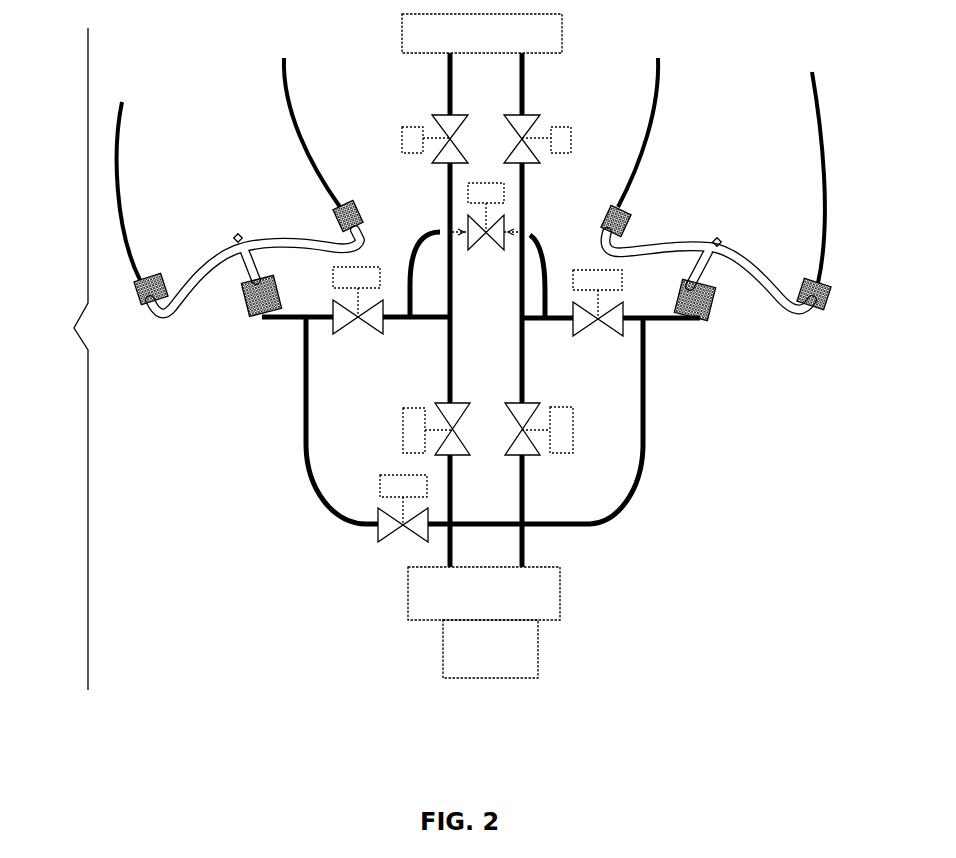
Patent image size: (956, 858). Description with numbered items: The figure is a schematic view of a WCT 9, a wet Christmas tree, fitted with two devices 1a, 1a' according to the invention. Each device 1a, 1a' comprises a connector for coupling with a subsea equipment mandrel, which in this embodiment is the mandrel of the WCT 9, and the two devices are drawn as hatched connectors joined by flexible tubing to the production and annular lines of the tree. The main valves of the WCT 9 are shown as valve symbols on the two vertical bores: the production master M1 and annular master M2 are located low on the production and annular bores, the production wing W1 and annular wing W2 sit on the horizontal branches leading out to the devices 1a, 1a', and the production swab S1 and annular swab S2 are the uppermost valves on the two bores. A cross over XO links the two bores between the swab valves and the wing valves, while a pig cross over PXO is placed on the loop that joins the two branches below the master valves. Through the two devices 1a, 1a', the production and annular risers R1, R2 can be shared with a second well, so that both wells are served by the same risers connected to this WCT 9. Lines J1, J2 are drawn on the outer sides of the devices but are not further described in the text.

The WCT 9 is at (54, 359).
The first jumper line J1 is at (122, 150).
The second jumper line J2 is at (820, 112).
The production riser R1 is at (295, 117).
The annular riser R2 is at (658, 113).
The device 1a is at (245, 232).
The device 1a' is at (743, 242).
The production swab S1 is at (420, 139).
The annular swab S2 is at (555, 139).
The cross over XO is at (486, 234).
The production wing W1 is at (358, 322).
The annular wing W2 is at (593, 328).
The production master M1 is at (407, 426).
The annular master M2 is at (563, 429).
The pig cross over PXO is at (361, 528).